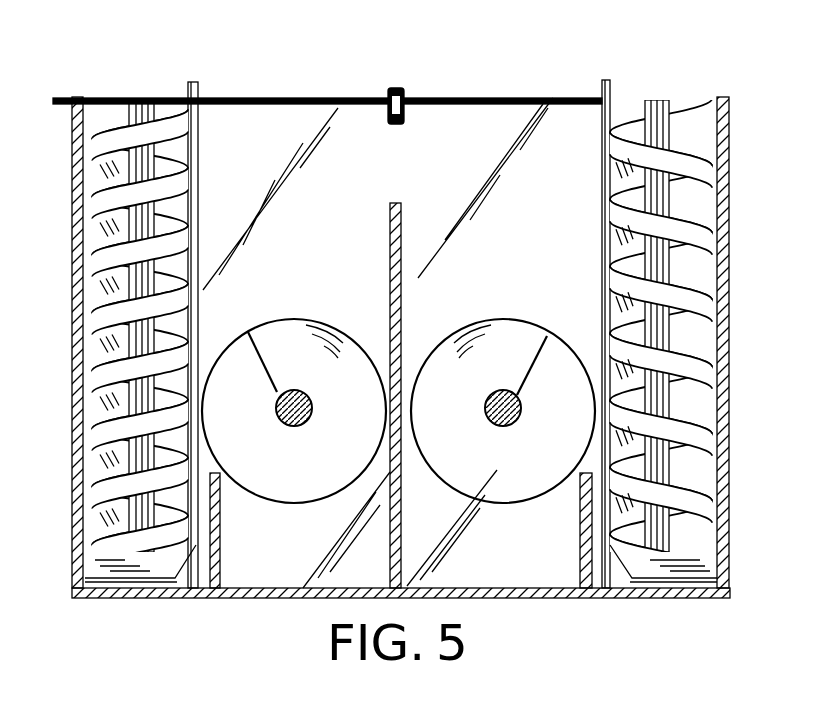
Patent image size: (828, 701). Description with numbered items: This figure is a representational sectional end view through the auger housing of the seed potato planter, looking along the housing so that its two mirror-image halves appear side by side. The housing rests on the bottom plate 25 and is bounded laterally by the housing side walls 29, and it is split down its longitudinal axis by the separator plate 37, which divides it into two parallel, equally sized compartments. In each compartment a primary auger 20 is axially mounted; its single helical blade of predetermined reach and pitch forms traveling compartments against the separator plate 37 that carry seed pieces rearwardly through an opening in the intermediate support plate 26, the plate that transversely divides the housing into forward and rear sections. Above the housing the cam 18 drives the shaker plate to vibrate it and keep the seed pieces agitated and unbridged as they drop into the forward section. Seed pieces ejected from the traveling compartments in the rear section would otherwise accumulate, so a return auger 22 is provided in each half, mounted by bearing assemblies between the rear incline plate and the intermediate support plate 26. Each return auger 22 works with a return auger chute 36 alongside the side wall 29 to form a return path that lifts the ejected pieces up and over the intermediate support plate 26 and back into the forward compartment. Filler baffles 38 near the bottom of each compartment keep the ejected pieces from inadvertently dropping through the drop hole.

The cam 18 is at (404, 96).
The primary auger 20 is at (298, 318).
The return auger 22 is at (130, 100).
The bottom plate 25 is at (604, 600).
The intermediate support plate 26 is at (360, 97).
The housing side walls 29 is at (72, 402).
The return auger chute 36 is at (199, 184).
The separator plate 37 is at (403, 218).
The filler baffles 38 is at (220, 548).